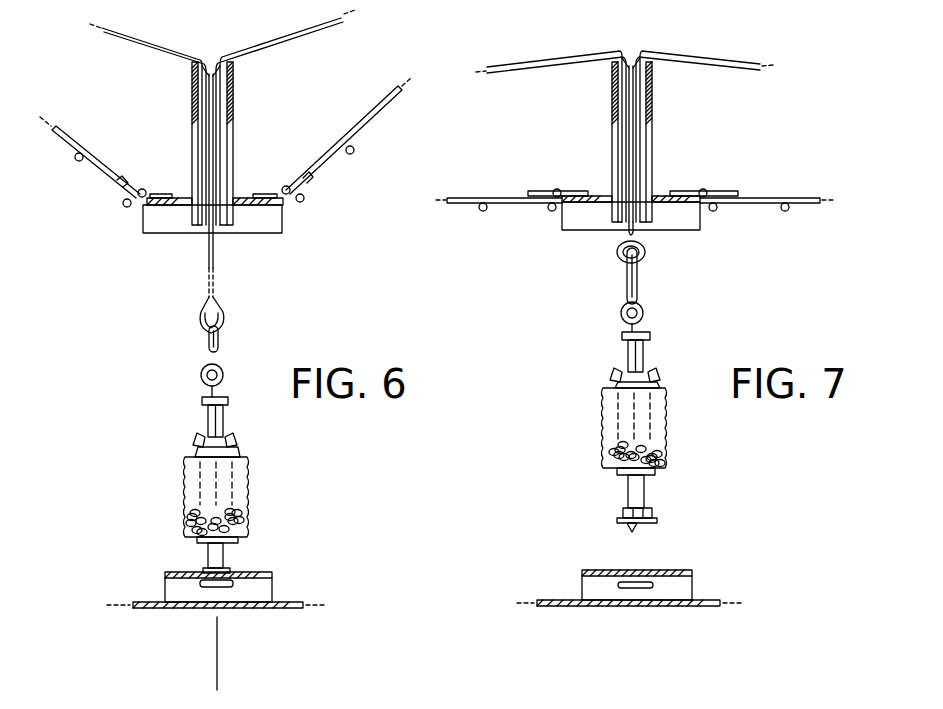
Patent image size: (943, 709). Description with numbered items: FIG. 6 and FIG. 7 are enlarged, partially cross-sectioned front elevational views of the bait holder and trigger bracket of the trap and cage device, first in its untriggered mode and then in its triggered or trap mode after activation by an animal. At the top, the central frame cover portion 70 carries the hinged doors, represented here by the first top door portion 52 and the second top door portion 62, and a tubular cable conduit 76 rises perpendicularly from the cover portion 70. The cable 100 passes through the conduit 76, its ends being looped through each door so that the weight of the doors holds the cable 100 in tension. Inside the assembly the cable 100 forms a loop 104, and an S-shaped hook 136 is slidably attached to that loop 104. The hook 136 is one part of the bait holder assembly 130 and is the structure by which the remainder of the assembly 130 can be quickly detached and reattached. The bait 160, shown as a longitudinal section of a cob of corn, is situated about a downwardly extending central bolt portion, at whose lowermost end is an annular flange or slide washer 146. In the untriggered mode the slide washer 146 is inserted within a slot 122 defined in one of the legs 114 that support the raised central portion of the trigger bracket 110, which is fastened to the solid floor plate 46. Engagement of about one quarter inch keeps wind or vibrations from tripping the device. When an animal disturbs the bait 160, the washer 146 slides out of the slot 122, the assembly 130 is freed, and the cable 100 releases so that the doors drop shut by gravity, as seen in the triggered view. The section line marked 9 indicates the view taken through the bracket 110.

In FIG. 6, the cable 100 is at (158, 46).
In FIG. 7, the cable 100 is at (548, 62).
In FIG. 6, the tubular cable conduit 76 is at (236, 103).
In FIG. 7, the tubular cable conduit 76 is at (653, 120).
In FIG. 6, the central frame cover portion 70 is at (186, 197).
In FIG. 7, the central frame cover portion 70 is at (606, 197).
In FIG. 6, the second top door portion 62 is at (113, 118).
In FIG. 7, the second top door portion 62 is at (475, 197).
In FIG. 6, the first top door portion 52 is at (333, 150).
In FIG. 7, the first top door portion 52 is at (776, 197).
In FIG. 6, the loop 104 is at (222, 262).
In FIG. 7, the loop 104 is at (618, 263).
In FIG. 6, the S-shaped hook 136 is at (218, 345).
In FIG. 7, the S-shaped hook 136 is at (645, 282).
In FIG. 6, the bait holder assembly 130 is at (290, 505).
In FIG. 7, the bait holder assembly 130 is at (575, 386).
In FIG. 6, the bait 160 is at (185, 480).
In FIG. 6, the legs 114 is at (180, 592).
In FIG. 7, the legs 114 is at (588, 592).
In FIG. 6, the trigger bracket 110 is at (275, 585).
In FIG. 7, the trigger bracket 110 is at (693, 590).
In FIG. 6, the slot 122 is at (240, 590).
In FIG. 7, the slot 122 is at (648, 587).
In FIG. 6, the solid floor plate 46 is at (178, 608).
In FIG. 7, the solid floor plate 46 is at (630, 603).
In FIG. 7, the slide washer 146 is at (660, 520).
In FIG. 6, the section line 9- 9 is at (210, 555).